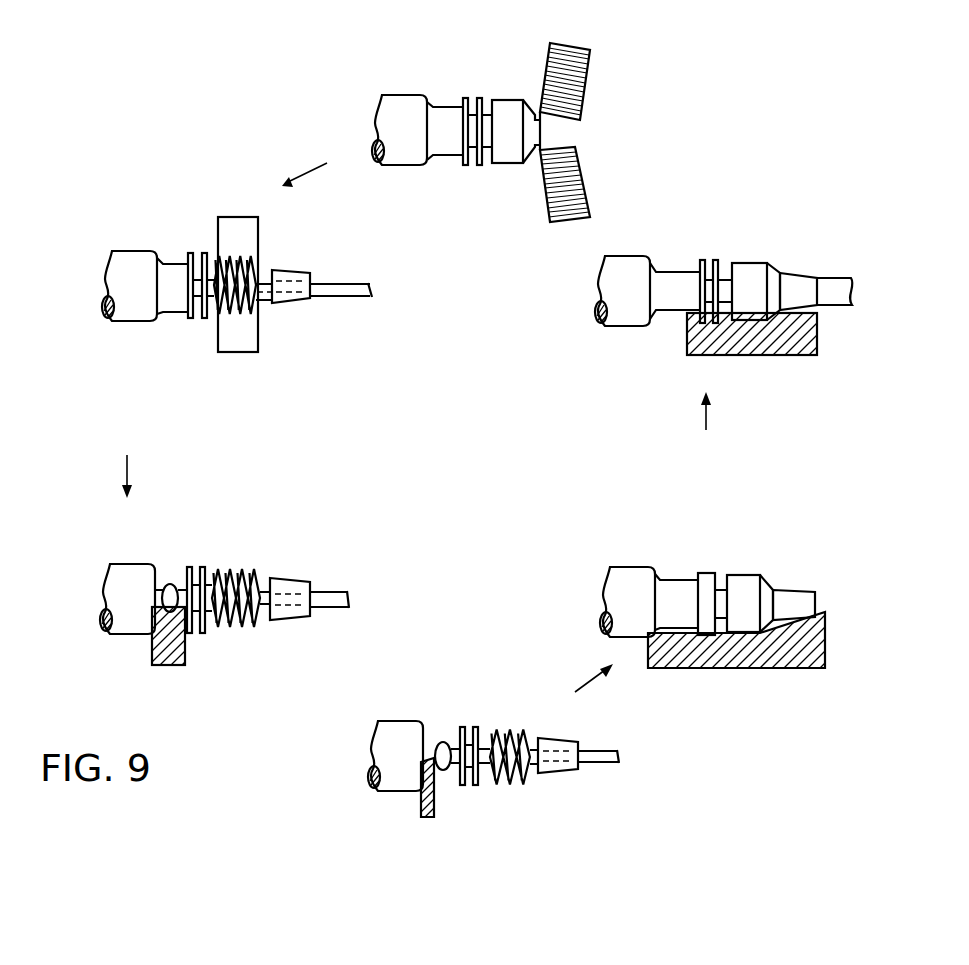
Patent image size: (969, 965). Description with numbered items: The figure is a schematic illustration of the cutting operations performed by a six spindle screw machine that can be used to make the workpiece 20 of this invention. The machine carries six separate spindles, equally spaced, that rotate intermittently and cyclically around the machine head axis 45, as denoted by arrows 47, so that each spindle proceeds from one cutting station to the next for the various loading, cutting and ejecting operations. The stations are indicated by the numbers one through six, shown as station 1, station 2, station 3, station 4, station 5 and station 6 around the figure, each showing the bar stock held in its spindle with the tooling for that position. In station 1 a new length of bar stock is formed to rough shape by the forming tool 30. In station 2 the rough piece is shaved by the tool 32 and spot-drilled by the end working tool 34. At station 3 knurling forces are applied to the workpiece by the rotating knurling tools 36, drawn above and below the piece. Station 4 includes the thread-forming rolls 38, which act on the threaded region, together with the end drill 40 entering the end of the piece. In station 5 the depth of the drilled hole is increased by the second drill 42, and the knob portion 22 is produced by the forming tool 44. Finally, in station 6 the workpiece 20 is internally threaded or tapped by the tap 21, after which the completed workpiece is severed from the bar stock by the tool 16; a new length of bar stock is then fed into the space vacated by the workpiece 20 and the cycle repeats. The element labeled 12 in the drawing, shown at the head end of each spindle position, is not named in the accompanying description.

The station 1 is at (611, 552).
The station 2 is at (588, 300).
The station 3 is at (404, 82).
The station 4 is at (127, 240).
The station 5 is at (216, 529).
The station 6 is at (460, 705).
The body 12 is at (384, 168).
The tool 16 is at (427, 815).
The workpiece 20 is at (523, 788).
The tap 21 is at (603, 760).
The knob portion 22 is at (174, 583).
The forming tool 30 is at (742, 668).
The tool 32 is at (773, 355).
The end working tool 34 is at (822, 280).
The knurling tools 36 is at (612, 202).
The thread-forming rolls 38 is at (280, 342).
The end drill 40 is at (340, 282).
The second drill 42 is at (331, 592).
The forming tool 44 is at (150, 666).
The machine head axis 45 is at (414, 447).
The arrows 47 is at (310, 712).